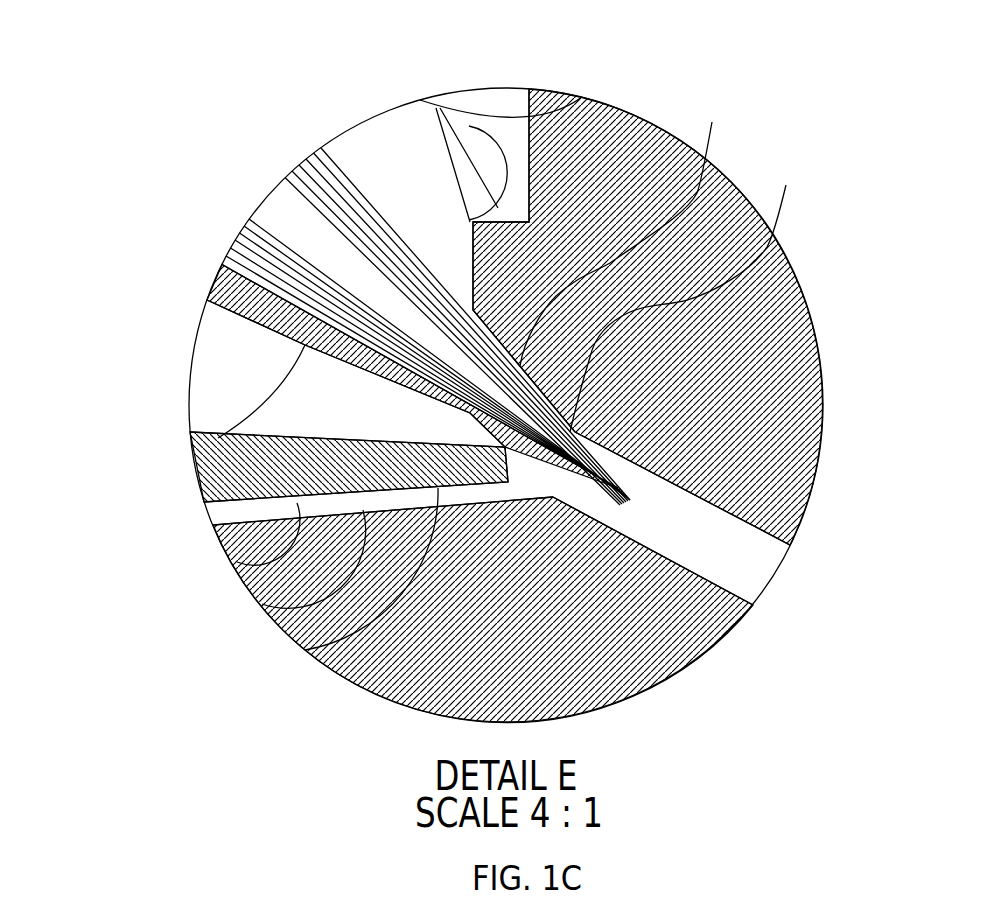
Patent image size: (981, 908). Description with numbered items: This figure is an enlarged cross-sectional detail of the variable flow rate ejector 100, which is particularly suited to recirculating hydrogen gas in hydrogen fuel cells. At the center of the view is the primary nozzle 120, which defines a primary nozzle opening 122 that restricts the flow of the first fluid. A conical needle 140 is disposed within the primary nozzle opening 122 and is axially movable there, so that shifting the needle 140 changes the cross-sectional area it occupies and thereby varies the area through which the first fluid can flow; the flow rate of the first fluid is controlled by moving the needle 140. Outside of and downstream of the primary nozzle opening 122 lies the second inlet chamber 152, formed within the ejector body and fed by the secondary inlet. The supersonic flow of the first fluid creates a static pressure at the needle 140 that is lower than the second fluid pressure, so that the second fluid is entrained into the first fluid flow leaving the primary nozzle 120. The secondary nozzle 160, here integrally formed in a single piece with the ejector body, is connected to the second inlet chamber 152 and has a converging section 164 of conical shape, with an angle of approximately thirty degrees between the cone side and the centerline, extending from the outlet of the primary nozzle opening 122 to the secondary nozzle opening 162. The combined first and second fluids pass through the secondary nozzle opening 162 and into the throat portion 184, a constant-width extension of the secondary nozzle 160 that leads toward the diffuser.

The variable flow rate ejector 100 is at (164, 188).
The primary nozzle 120 is at (237, 560).
The primary nozzle opening 122 is at (621, 314).
The needle 140 is at (228, 273).
The second inlet chamber 152 is at (505, 190).
The secondary nozzle 160 is at (263, 604).
The secondary nozzle opening 162 is at (690, 290).
The converging section 164 is at (306, 648).
The throat portion 184 is at (818, 452).